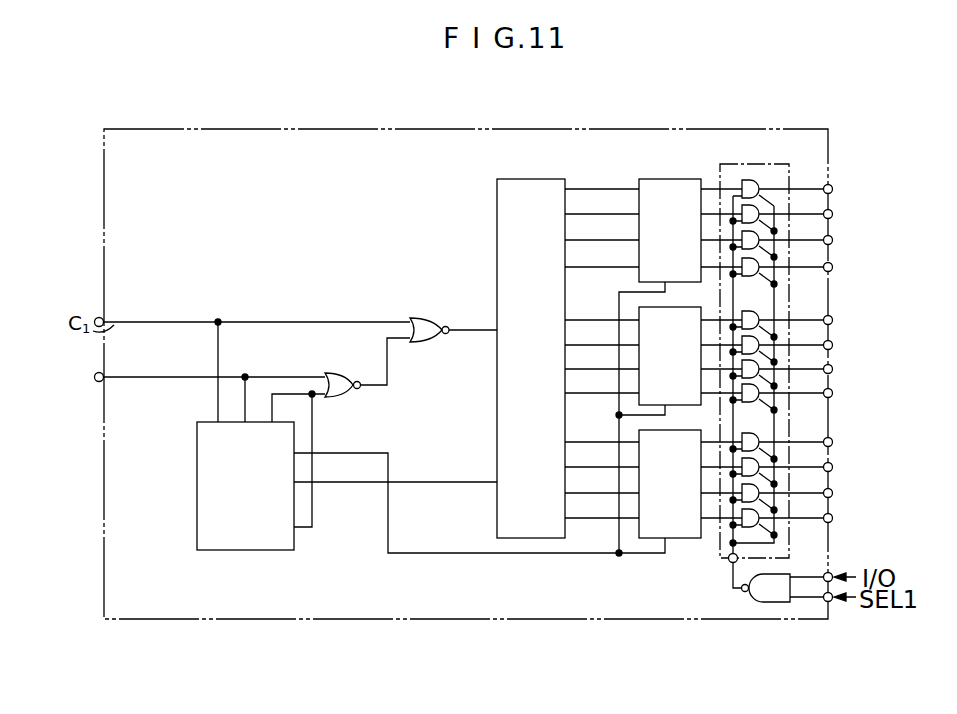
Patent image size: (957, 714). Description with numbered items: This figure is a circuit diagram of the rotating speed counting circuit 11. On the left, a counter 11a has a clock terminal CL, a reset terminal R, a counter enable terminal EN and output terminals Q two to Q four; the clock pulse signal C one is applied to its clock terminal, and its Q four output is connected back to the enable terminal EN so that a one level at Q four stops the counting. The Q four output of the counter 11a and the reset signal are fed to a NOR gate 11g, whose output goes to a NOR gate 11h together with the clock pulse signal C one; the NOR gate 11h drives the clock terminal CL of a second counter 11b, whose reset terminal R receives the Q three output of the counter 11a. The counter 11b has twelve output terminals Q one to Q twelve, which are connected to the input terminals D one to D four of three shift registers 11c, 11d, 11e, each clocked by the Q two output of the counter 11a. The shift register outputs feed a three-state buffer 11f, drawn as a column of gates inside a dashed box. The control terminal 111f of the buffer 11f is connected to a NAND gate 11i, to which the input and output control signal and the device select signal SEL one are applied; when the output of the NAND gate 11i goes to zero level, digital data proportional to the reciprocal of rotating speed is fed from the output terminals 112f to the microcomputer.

The rotating speed counting circuit 11 is at (382, 128).
The counter 11a is at (255, 551).
The counter 11b is at (525, 178).
The shift register 11c is at (664, 178).
The shift register 11d is at (636, 305).
The shift register 11e is at (616, 416).
The three-state buffer 11f is at (775, 165).
The NOR gate 11g is at (340, 371).
The NOR gate 11h is at (437, 320).
The NAND gate 11i is at (772, 603).
The control terminal 111f is at (728, 562).
The output terminals 112f is at (832, 347).